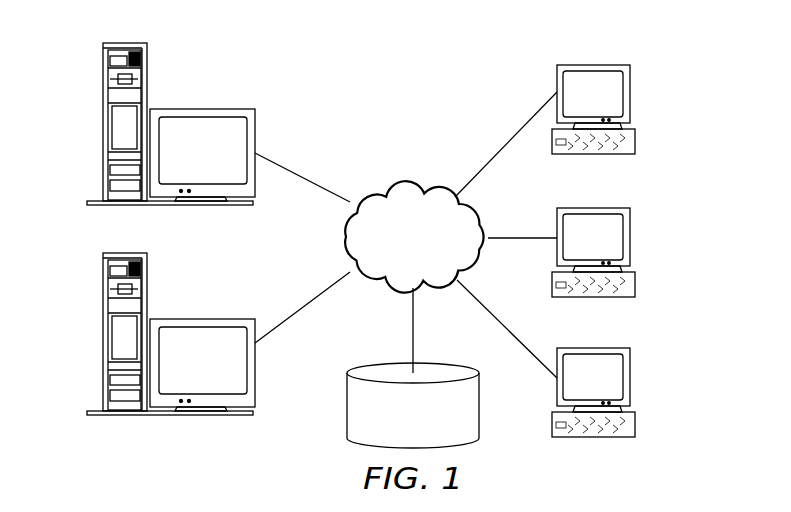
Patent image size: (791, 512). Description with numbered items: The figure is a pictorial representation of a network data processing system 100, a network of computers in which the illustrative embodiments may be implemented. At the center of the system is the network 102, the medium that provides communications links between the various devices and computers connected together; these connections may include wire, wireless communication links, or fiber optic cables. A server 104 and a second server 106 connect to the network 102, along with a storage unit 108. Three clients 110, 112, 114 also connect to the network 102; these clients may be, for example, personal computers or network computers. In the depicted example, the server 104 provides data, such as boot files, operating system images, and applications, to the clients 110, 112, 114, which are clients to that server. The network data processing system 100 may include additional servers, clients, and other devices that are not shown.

The network data processing system 100 is at (468, 83).
The network 102 is at (383, 187).
The server 104 is at (103, 123).
The server 106 is at (103, 333).
The storage unit 108 is at (348, 418).
The client 110 is at (630, 92).
The client 112 is at (630, 237).
The client 114 is at (630, 378).